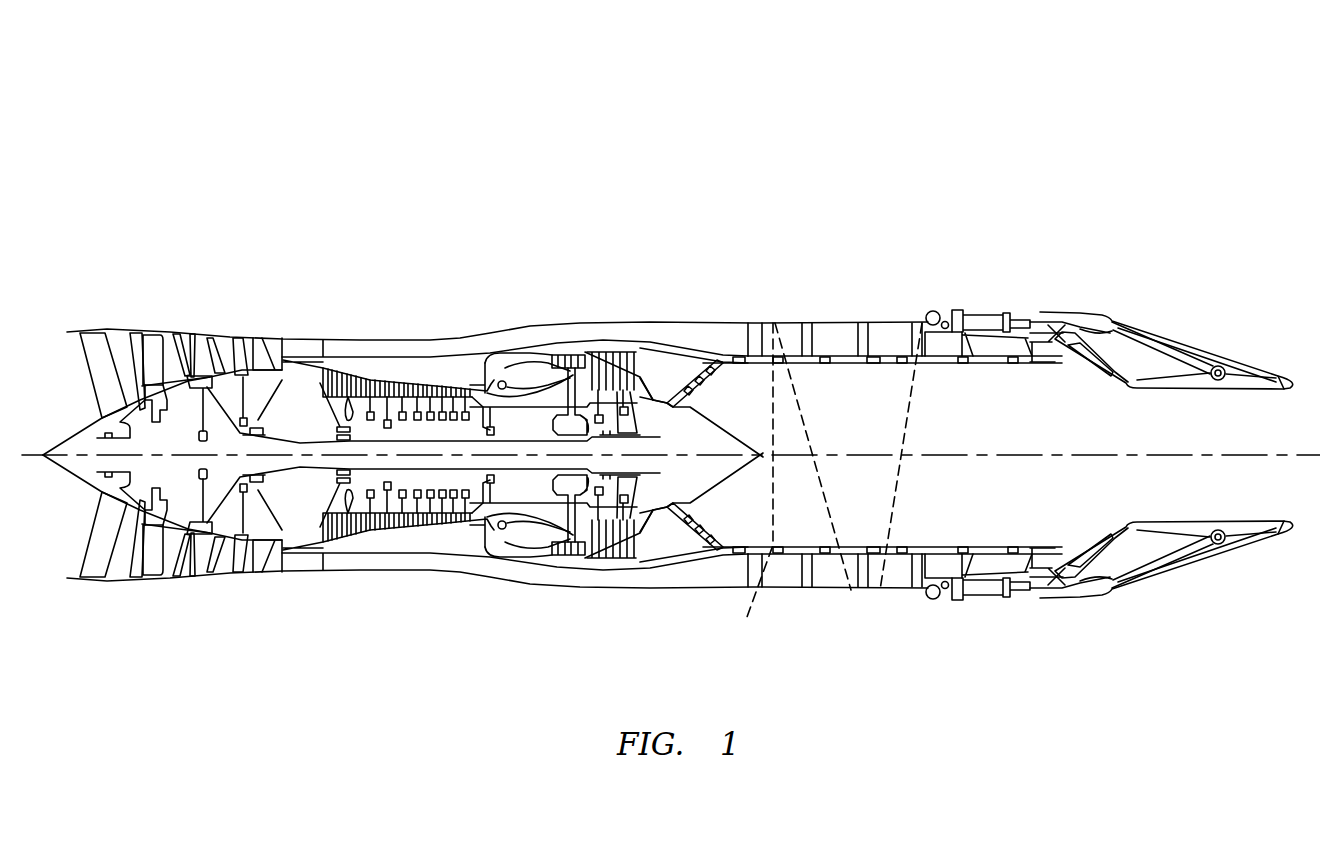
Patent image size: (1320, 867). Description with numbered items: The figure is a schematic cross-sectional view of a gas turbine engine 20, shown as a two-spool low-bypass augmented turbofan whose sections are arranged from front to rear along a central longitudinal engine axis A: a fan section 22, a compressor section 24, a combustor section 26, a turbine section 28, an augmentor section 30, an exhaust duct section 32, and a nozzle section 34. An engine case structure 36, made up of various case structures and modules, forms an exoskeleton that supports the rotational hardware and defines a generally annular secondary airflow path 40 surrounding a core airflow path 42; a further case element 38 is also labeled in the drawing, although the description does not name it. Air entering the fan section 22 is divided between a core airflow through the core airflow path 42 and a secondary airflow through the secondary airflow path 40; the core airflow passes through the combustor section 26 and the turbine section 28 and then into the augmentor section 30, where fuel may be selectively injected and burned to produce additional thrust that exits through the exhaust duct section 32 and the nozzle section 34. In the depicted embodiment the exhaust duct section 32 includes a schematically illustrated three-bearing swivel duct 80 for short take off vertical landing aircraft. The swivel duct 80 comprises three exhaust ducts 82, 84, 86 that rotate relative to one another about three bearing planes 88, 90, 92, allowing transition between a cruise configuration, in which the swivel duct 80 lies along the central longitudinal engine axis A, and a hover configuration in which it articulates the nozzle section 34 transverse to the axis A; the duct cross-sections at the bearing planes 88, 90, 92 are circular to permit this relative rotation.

The gas turbine engine 20 is at (953, 161).
The fan section 22 is at (65, 262).
The compressor section 24 is at (492, 262).
The combustor section 26 is at (492, 262).
The turbine section 28 is at (567, 262).
The augmentor section 30 is at (643, 262).
The exhaust duct section 32 is at (1027, 262).
The nozzle section 34 is at (1300, 262).
The engine case structure 36 is at (461, 589).
The core engine casing 38 is at (405, 540).
The secondary airflow path 40 is at (354, 563).
The core airflow path 42 is at (272, 562).
The three-bearing swivel duct 80 is at (978, 613).
The exhaust duct 82 is at (784, 522).
The exhaust duct 84 is at (840, 424).
The exhaust duct 86 is at (922, 527).
The bearing plane 88 is at (748, 484).
The bearing plane 90 is at (826, 545).
The bearing plane 92 is at (883, 590).
The central longitudinal engine axis A is at (1298, 465).